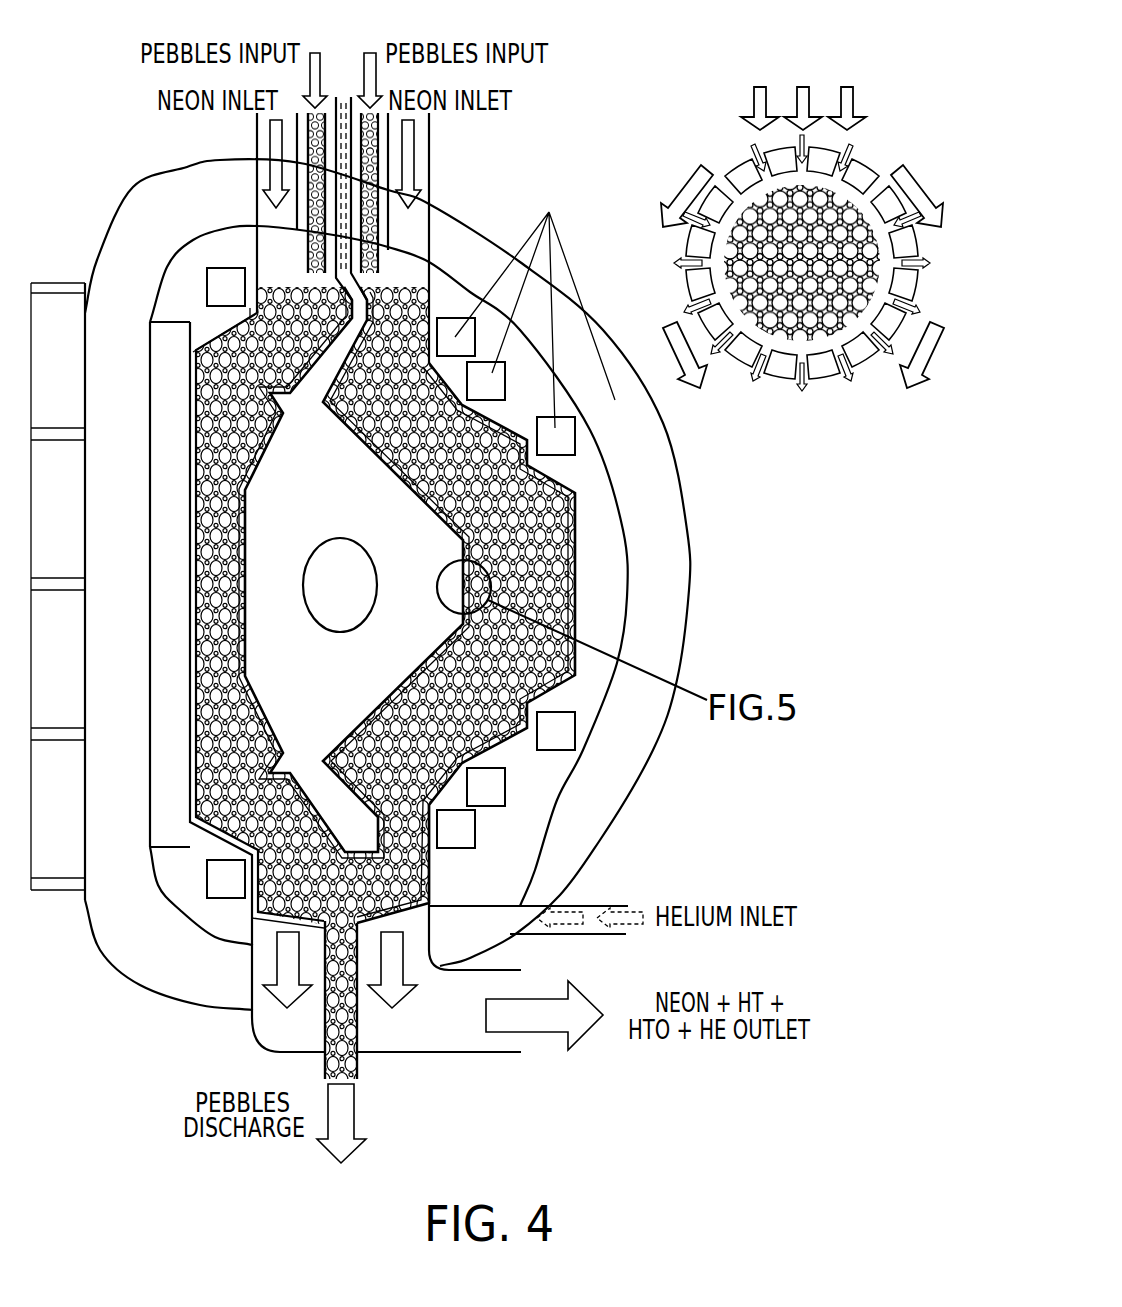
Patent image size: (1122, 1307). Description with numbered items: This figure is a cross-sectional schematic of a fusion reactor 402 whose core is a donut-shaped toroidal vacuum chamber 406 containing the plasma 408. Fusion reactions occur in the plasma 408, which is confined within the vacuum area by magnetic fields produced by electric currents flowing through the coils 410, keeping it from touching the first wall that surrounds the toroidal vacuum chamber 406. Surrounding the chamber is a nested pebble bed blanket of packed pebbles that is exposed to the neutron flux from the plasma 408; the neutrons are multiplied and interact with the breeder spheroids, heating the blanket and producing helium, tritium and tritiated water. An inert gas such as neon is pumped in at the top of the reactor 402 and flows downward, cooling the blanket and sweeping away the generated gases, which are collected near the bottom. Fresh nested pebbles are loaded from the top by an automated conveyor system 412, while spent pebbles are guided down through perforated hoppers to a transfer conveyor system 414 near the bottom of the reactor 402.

The fusion reactor 402 is at (634, 44).
The toroidal vacuum chamber 406 is at (362, 495).
The plasma 408 is at (347, 565).
The coils 410 is at (555, 183).
The automated conveyor system 412 is at (310, 230).
The transfer conveyor system 414 is at (348, 1055).